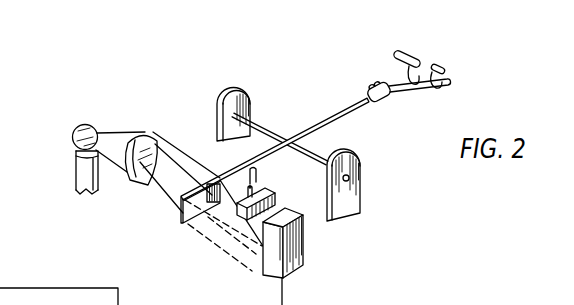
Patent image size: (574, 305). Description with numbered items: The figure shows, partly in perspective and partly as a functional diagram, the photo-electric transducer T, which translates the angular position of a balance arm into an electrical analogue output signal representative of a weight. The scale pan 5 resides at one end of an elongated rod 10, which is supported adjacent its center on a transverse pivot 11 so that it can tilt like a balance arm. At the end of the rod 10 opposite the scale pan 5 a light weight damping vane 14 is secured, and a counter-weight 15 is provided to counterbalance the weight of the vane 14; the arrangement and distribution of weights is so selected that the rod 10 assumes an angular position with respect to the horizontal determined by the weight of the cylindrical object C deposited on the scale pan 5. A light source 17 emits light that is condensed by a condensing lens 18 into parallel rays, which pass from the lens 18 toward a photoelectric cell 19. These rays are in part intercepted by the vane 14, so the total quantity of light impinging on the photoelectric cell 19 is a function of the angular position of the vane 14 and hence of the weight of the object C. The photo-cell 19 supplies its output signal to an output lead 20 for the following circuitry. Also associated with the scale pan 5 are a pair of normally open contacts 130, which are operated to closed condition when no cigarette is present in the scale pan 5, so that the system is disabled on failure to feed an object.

The scale pan 5 is at (425, 58).
The elongated rod 10 is at (330, 114).
The transverse pivot 11 is at (318, 164).
The damping vane 14 is at (197, 215).
The counter-weight 15 is at (367, 88).
The light source 17 is at (72, 141).
The condensing lens 18 is at (152, 132).
The photoelectric cell 19 is at (298, 243).
The output lead 20 is at (284, 289).
The contacts 130 is at (258, 192).
The cylindrical object C is at (438, 88).
The transducer T is at (372, 148).